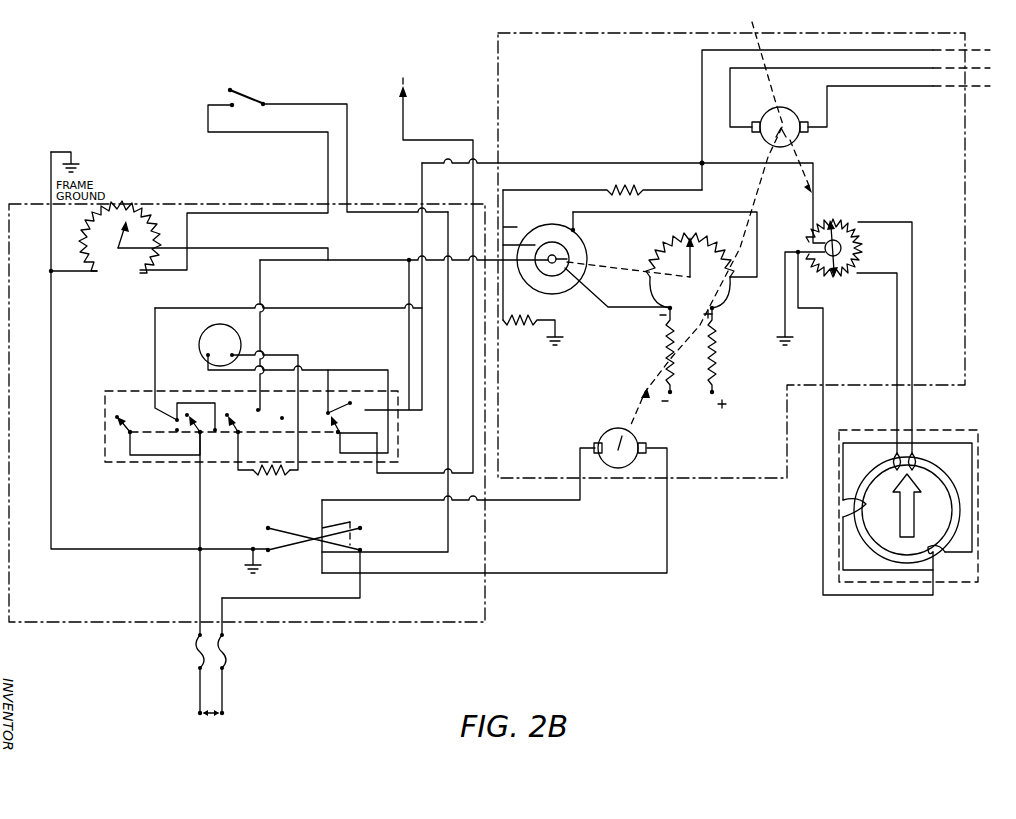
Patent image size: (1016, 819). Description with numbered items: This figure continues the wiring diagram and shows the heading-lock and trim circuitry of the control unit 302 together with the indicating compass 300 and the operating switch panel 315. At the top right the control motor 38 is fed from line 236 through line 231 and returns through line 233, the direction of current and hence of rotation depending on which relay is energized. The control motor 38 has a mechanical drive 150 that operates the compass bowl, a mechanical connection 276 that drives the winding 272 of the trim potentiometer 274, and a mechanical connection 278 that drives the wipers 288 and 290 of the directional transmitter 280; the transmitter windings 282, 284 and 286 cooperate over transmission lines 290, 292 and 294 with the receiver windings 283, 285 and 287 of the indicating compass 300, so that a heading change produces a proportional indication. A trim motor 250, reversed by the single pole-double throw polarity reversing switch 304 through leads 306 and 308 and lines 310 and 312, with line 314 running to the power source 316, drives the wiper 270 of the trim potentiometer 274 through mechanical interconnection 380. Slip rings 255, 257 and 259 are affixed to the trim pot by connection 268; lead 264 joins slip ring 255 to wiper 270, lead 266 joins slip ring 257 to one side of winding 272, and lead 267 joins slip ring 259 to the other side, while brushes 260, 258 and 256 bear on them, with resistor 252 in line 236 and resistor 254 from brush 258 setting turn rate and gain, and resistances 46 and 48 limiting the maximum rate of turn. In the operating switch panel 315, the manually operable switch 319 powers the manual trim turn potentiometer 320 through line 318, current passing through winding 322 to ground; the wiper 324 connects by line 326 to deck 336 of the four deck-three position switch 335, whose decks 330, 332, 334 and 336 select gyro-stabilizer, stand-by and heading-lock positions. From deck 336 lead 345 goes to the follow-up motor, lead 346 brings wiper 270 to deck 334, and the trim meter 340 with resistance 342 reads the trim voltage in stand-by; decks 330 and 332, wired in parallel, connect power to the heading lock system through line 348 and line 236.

The manually operable switch 319 is at (210, 96).
The line 318 is at (326, 170).
The line 326 is at (247, 251).
The winding 322 is at (148, 222).
The manual trim turn potentiometer 320 is at (120, 274).
The wiper 324 is at (91, 236).
The line 348 is at (155, 345).
The trim meter 340 is at (204, 343).
The lead 346 is at (376, 258).
The lead 345 is at (405, 123).
The lead 306 is at (523, 502).
The lead 308 is at (538, 572).
The trim motor 250 is at (607, 433).
The mechanical interconnection 380 is at (721, 224).
The line 310 is at (378, 549).
The polarity reversing switch 304 is at (294, 522).
The line 312 is at (122, 548).
The conductor 314 is at (198, 598).
The power source 316 is at (212, 722).
The operating switch panel 315 is at (397, 624).
The four deck-three position switch 335 is at (158, 463).
The deck 330 is at (128, 444).
The deck 332 is at (198, 437).
The deck 334 is at (240, 437).
The deck 336 is at (339, 438).
The resistance 342 is at (262, 476).
The control unit 302 is at (758, 480).
The mechanical drive 150 is at (753, 47).
The line 236 is at (907, 34).
The line 231 is at (860, 67).
The line 233 is at (873, 88).
The control motor 38 is at (771, 115).
The resistor 252 is at (614, 191).
The mechanical connection 276 is at (760, 196).
The brush 256 is at (517, 226).
The brush 258 is at (573, 228).
The slip ring 255 is at (560, 253).
The lead 264 is at (569, 259).
The slip ring 257 is at (528, 284).
The brush 260 is at (552, 277).
The slip ring 259 is at (577, 285).
The connection 268 is at (625, 270).
The lead 266 is at (627, 309).
The lead 267 is at (668, 212).
The winding 272 is at (714, 247).
The wiper 270 is at (690, 273).
The trim potentiometer 274 is at (724, 306).
The resistance 48 is at (656, 358).
The resistance 46 is at (716, 358).
The resistor 254 is at (522, 324).
The directional transmitter 280 is at (850, 226).
The mechanical connection 278 is at (820, 217).
The transmitter winding 286 is at (810, 223).
The transmission line 290 is at (858, 235).
The transmitter winding 284 is at (862, 253).
The wiper 288 is at (822, 270).
The transmitter winding 282 is at (836, 278).
The transmission line 292 is at (896, 367).
The transmission line 294 is at (822, 364).
The indicating compass 300 is at (817, 582).
The receiver winding 283 is at (915, 453).
The receiver winding 287 is at (869, 511).
The receiver winding 285 is at (933, 545).